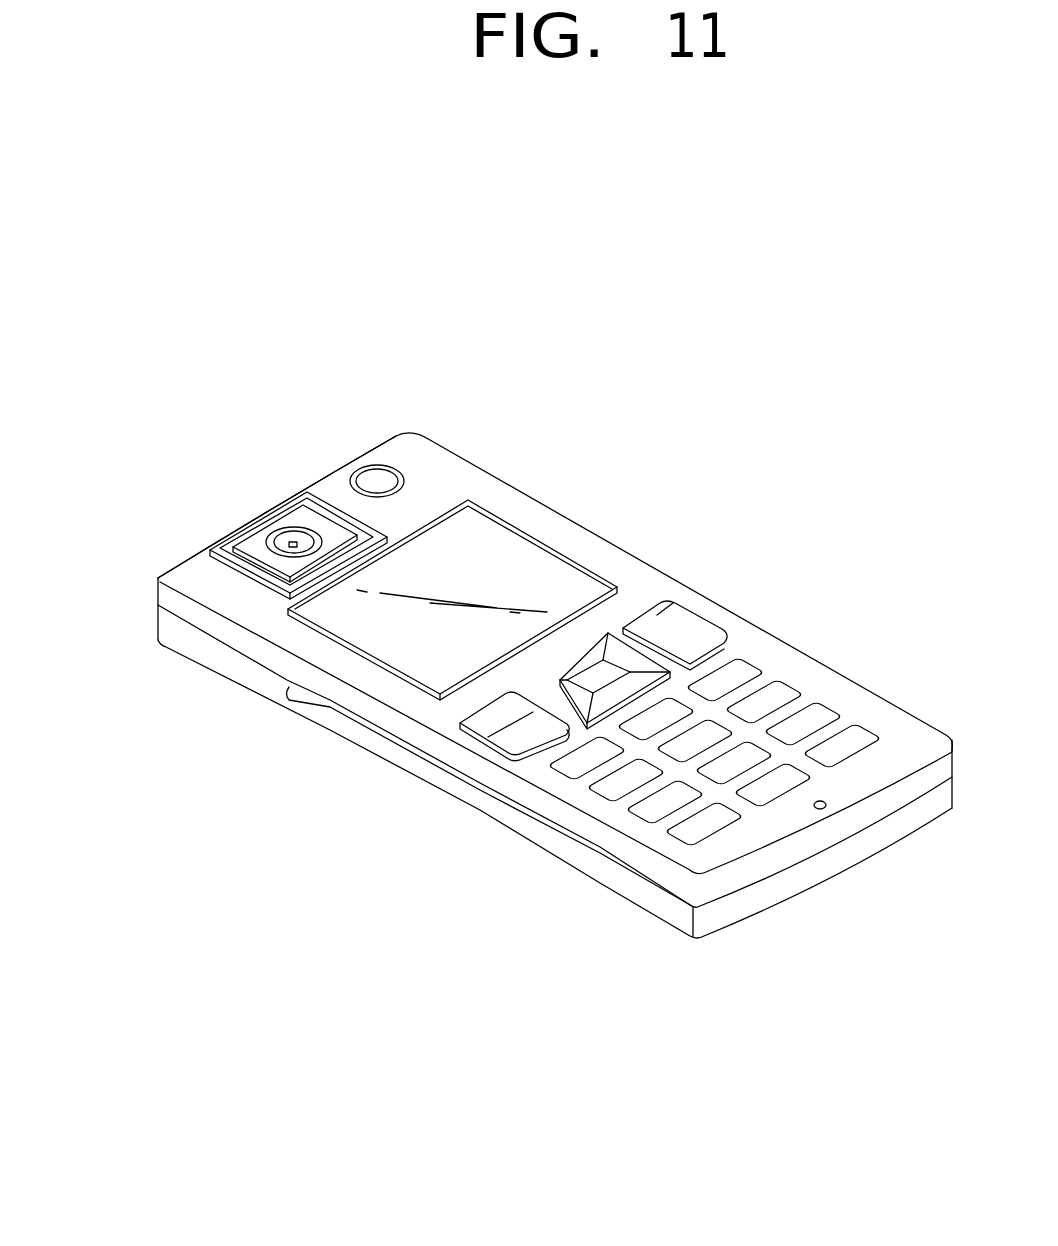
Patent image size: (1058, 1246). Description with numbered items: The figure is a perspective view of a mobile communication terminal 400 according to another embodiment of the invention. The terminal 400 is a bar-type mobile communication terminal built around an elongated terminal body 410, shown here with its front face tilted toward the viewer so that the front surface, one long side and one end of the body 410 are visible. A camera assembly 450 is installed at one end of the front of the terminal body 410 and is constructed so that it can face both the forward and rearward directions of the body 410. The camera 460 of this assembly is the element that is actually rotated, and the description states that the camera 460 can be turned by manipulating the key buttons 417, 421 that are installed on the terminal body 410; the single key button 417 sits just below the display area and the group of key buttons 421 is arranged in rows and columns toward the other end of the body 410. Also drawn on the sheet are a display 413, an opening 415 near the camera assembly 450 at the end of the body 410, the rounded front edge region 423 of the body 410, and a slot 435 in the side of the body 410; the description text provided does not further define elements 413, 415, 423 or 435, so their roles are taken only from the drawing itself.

The mobile communication terminal 400 is at (680, 393).
The terminal body 410 is at (726, 952).
The display 413 is at (487, 553).
The audio output unit (speaker) 415 is at (376, 487).
The key button 417 is at (668, 600).
The key buttons 421 is at (830, 712).
The front surface edge of body 423 is at (250, 577).
The slot (interface) 435 is at (488, 812).
The camera assembly 450 is at (280, 505).
The camera 460 is at (262, 533).